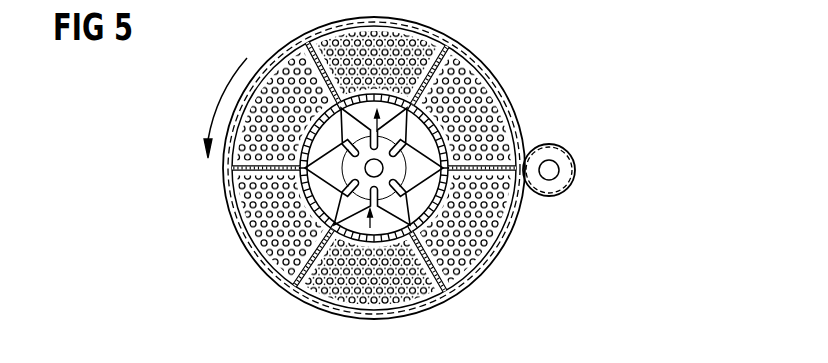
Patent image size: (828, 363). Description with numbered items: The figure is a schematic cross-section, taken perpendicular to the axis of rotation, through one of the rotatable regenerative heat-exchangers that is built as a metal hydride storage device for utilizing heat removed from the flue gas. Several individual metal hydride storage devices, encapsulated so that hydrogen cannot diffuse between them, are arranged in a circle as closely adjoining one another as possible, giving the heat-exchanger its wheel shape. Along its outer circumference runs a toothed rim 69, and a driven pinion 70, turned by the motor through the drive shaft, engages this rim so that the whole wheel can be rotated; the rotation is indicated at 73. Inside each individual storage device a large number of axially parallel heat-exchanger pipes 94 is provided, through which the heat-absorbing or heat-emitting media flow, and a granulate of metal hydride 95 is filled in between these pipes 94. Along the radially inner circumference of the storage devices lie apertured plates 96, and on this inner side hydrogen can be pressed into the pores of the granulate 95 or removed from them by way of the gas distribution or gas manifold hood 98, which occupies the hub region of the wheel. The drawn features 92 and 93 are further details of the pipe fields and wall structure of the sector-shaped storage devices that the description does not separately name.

The toothed rim 69 is at (517, 115).
The driven pinion 70 is at (567, 156).
The direction of rotation 73 is at (221, 103).
The perforations of upper sector plate 92 is at (457, 84).
The perforations of lower sector plates 93 is at (322, 287).
The heat-exchanger pipes 94 is at (458, 270).
The granulate of metal hydride 95 is at (377, 302).
The apertured plates 96 is at (362, 137).
The gas distribution or gas manifold hood 98 is at (430, 177).